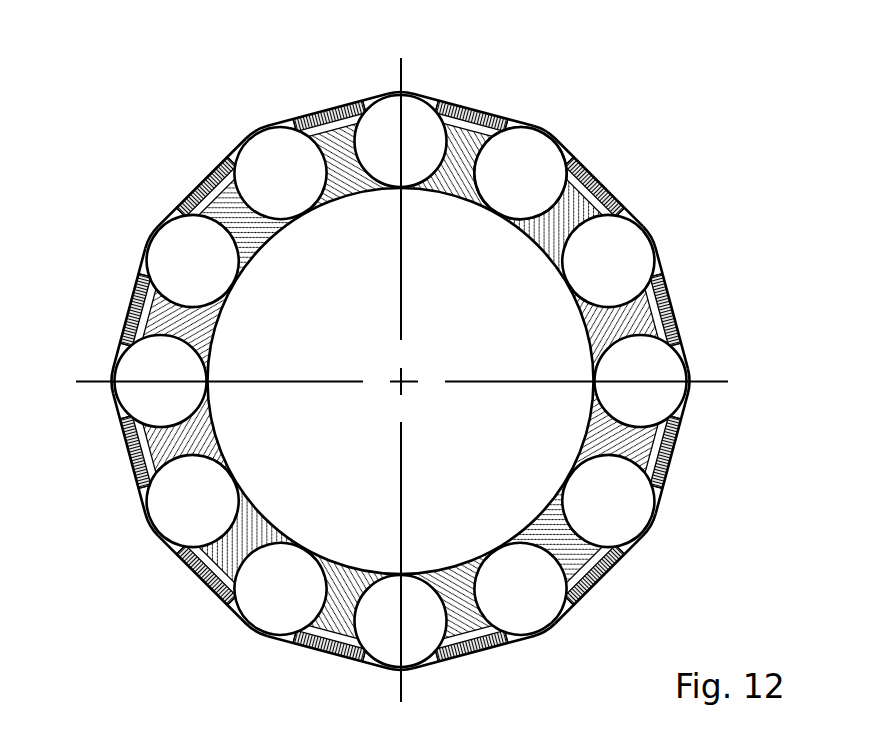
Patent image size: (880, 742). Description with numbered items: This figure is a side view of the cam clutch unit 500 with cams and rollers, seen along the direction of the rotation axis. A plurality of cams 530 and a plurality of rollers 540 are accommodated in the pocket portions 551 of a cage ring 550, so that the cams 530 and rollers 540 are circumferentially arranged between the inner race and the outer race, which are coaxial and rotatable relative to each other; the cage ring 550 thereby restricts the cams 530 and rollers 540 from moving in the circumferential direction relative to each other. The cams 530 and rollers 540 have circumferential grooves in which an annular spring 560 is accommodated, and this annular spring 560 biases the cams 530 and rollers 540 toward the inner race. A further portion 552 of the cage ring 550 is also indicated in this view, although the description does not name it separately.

The cam clutch unit 500 is at (130, 88).
The cam 530 is at (386, 133).
The roller 540 is at (533, 157).
The cage ring 550 is at (193, 183).
The pocket portion 551 is at (224, 148).
The rigid portion 552 is at (596, 162).
The annular spring 560 is at (468, 123).